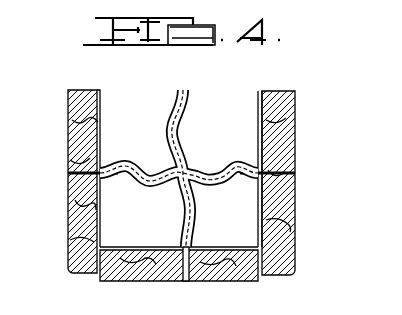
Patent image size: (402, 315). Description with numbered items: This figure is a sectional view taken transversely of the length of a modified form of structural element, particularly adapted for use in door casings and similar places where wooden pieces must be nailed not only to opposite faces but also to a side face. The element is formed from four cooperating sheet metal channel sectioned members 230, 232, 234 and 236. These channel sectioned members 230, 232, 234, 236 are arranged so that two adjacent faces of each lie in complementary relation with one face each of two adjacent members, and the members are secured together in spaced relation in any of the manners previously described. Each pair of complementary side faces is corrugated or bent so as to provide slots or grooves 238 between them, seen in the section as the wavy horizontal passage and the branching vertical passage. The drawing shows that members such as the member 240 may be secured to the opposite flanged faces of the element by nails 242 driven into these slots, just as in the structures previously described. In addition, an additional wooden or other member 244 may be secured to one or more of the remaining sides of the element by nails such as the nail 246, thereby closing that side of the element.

The sheet metal channel sectioned member 230 is at (260, 119).
The sheet metal channel sectioned member 232 is at (261, 231).
The sheet metal channel sectioned member 234 is at (109, 105).
The sheet metal channel sectioned member 236 is at (110, 232).
The slots or grooves 238 is at (183, 131).
The member 240 is at (68, 152).
The nail 242 is at (68, 176).
The wooden or other member 244 is at (140, 272).
The nail 246 is at (186, 281).